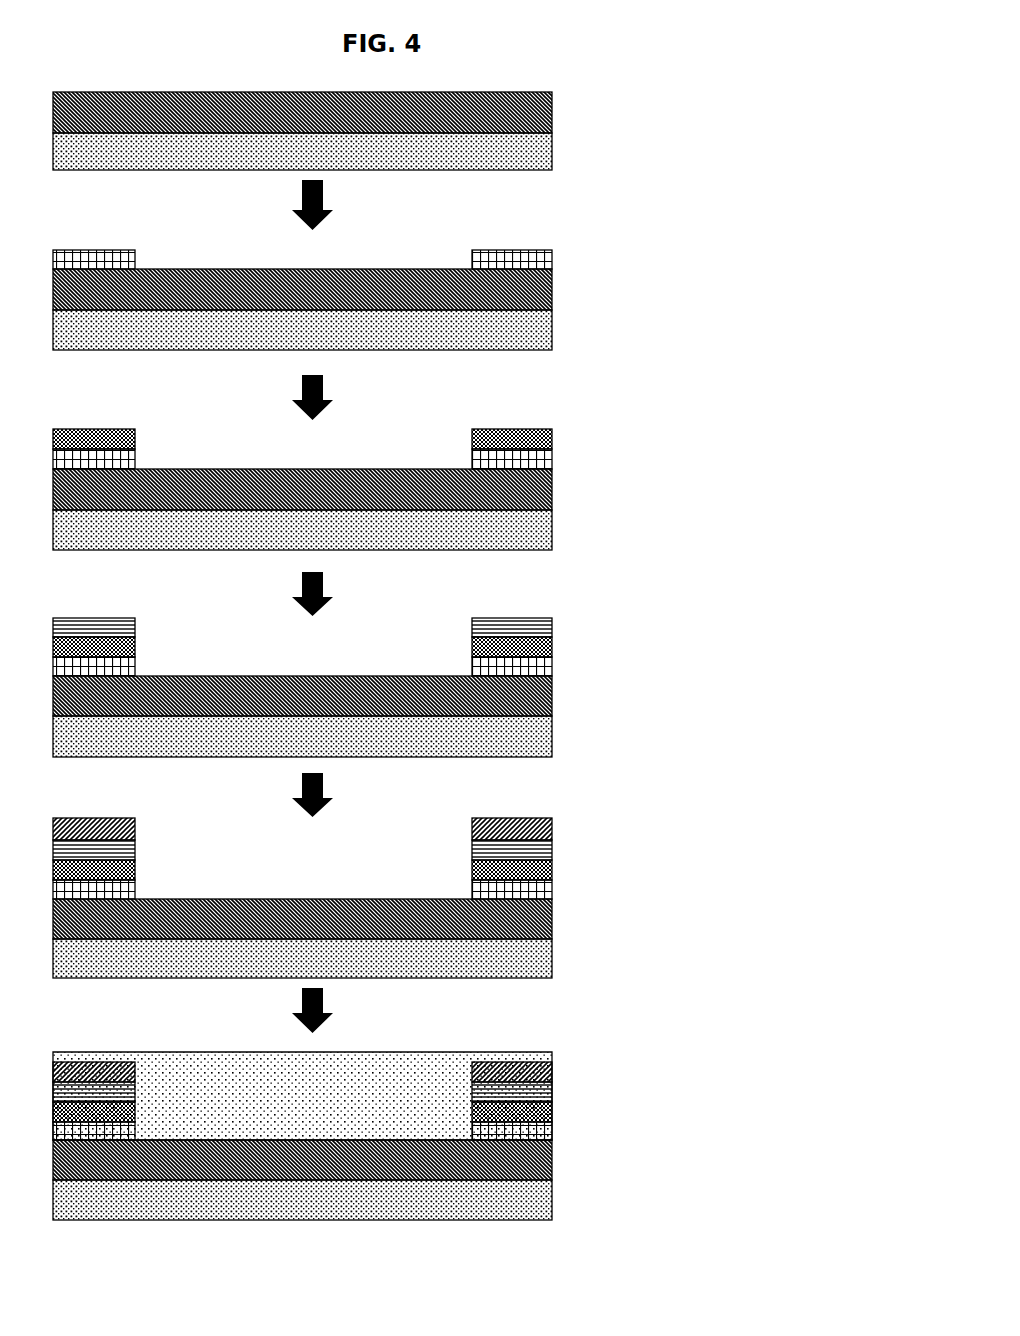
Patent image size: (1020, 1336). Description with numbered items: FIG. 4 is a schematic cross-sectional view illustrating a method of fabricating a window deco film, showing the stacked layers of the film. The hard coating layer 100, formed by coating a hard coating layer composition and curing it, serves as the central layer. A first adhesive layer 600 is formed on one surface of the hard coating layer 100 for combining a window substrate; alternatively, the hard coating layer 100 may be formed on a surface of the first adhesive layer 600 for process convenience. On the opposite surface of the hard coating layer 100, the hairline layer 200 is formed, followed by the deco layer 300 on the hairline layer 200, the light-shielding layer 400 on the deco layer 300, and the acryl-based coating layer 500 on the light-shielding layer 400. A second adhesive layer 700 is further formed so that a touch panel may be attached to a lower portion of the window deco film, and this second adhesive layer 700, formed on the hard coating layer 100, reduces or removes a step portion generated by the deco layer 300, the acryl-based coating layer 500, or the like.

The hard coating layer 100 is at (525, 120).
The hairline layer 200 is at (525, 258).
The deco layer 300 is at (525, 440).
The light-shielding layer 400 is at (525, 628).
The acryl-based coating layer 500 is at (525, 832).
The first adhesive layer 600 is at (525, 148).
The second adhesive layer 700 is at (305, 1063).